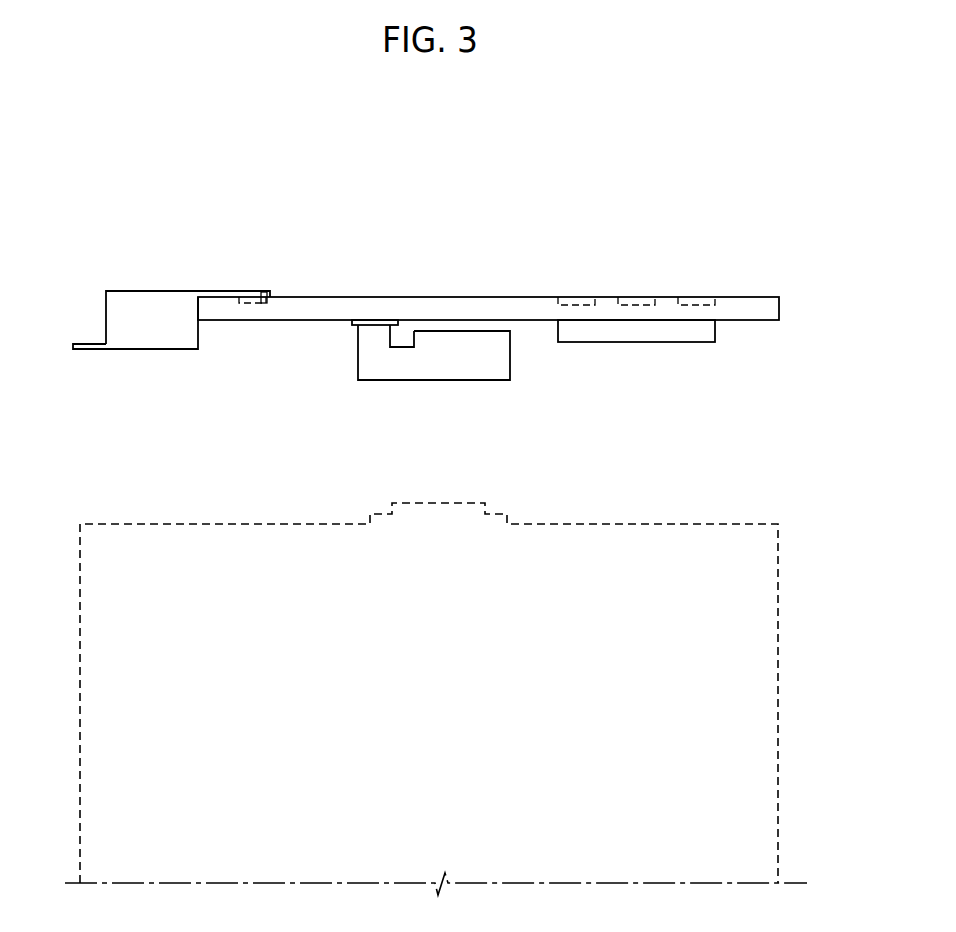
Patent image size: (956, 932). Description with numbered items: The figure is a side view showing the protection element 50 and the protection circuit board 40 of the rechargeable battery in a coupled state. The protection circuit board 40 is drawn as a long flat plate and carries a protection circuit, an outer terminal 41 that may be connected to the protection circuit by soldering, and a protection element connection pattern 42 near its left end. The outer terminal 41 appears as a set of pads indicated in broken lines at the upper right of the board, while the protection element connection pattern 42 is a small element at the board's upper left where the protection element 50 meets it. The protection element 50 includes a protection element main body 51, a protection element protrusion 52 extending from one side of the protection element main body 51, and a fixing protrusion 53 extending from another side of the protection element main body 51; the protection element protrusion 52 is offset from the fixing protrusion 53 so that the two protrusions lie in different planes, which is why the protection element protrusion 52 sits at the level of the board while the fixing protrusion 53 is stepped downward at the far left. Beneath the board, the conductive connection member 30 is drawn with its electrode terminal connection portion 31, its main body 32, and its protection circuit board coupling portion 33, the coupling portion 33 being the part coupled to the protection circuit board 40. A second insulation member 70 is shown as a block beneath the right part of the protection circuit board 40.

The conductive connection member 30 is at (401, 403).
The electrode terminal connection portion 31 is at (456, 386).
The main body 32 is at (373, 367).
The protection circuit board coupling portion 33 is at (353, 327).
The protection circuit board 40 is at (636, 244).
The outer terminal 41 is at (690, 297).
The protection element connection pattern 42 is at (268, 291).
The protection element 50 is at (171, 304).
The protection element main body 51 is at (128, 292).
The protection element protrusion 52 is at (245, 297).
The fixing protrusion 53 is at (87, 350).
The second insulation member 70 is at (635, 335).